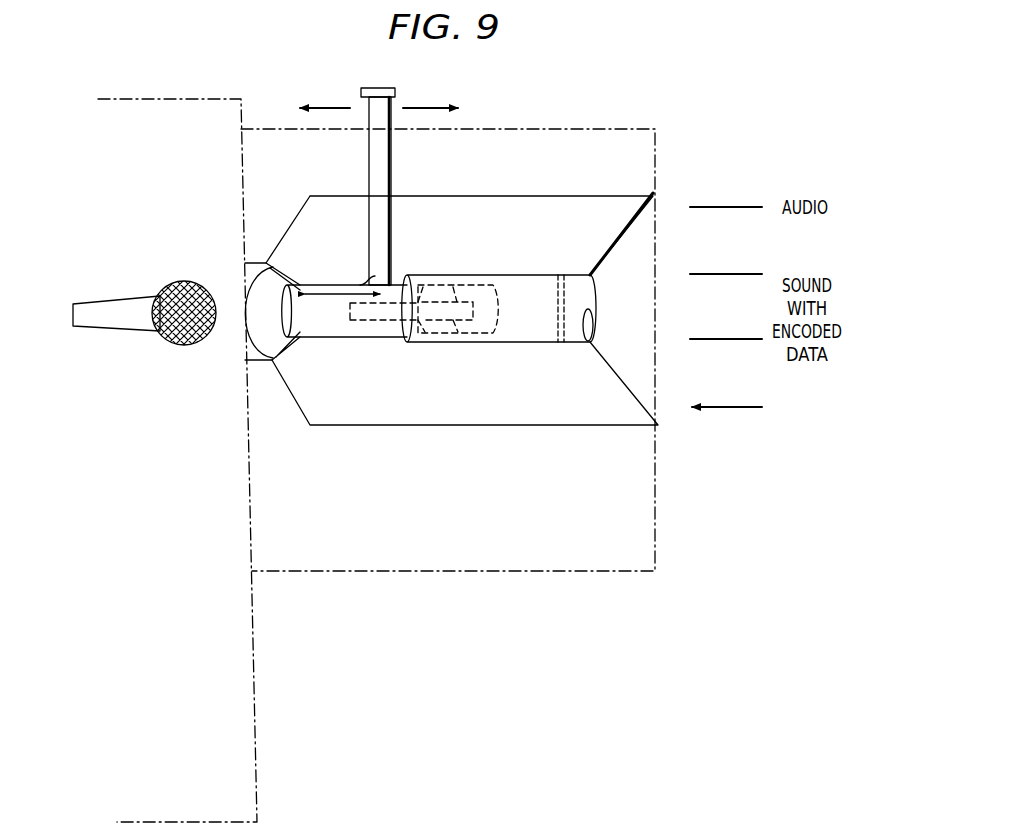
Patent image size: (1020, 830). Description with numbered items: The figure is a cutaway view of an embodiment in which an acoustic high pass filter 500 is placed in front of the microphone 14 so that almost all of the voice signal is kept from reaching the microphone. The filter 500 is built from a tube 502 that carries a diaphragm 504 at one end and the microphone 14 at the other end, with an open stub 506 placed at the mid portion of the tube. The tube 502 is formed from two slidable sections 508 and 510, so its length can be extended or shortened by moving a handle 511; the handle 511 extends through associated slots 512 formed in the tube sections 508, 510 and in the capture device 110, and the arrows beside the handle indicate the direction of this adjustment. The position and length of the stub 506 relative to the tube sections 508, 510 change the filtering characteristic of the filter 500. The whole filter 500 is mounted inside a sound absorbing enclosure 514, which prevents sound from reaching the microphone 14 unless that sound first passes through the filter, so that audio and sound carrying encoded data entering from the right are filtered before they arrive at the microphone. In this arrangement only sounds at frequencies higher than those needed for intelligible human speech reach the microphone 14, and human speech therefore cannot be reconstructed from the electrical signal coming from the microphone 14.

The microphone 14 is at (113, 303).
The capture device 110 is at (253, 647).
The acoustic high pass filter 500 is at (603, 90).
The tube 502 is at (404, 250).
The diaphragm 504 is at (553, 343).
The open stub 506 is at (356, 342).
The slidable section 508 is at (410, 274).
The slidable section 510 is at (363, 283).
The handle 511 is at (378, 165).
The slots 512 is at (403, 142).
The sound absorbing enclosure 514 is at (556, 425).